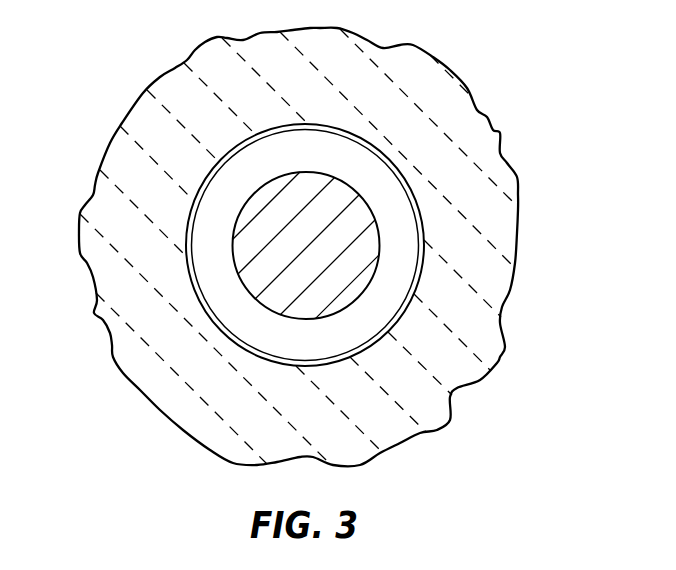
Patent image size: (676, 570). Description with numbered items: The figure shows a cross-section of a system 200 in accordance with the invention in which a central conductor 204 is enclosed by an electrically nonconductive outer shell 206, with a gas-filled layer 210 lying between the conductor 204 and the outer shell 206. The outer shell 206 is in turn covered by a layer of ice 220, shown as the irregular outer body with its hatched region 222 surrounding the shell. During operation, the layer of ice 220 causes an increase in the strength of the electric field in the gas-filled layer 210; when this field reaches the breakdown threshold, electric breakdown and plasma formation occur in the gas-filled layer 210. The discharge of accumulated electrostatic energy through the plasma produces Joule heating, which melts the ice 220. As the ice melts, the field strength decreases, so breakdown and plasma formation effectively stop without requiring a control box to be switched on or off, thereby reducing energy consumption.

The system 200 is at (307, 236).
The conductor 204 is at (348, 215).
The outer shell 206 is at (188, 207).
The gas-filled layer 210 is at (223, 283).
The layer of ice 220 is at (178, 392).
The strength member layer 222 is at (525, 69).